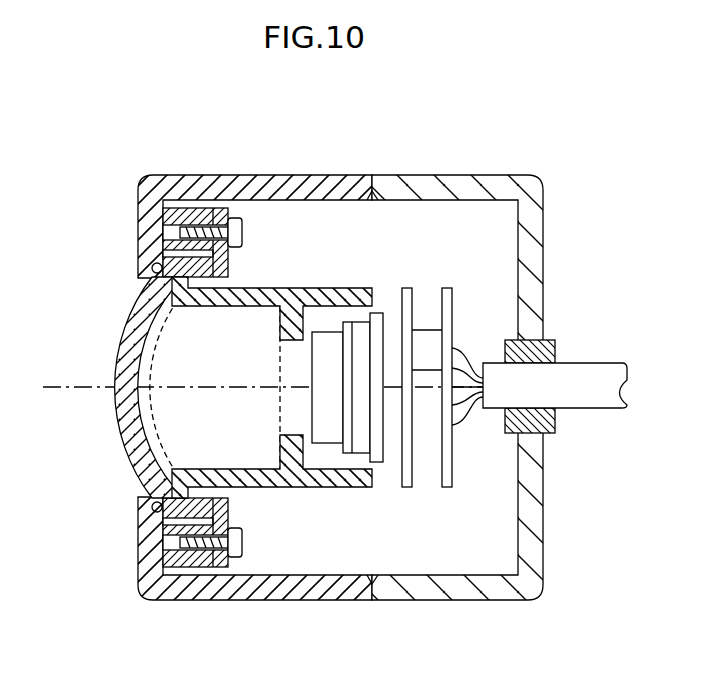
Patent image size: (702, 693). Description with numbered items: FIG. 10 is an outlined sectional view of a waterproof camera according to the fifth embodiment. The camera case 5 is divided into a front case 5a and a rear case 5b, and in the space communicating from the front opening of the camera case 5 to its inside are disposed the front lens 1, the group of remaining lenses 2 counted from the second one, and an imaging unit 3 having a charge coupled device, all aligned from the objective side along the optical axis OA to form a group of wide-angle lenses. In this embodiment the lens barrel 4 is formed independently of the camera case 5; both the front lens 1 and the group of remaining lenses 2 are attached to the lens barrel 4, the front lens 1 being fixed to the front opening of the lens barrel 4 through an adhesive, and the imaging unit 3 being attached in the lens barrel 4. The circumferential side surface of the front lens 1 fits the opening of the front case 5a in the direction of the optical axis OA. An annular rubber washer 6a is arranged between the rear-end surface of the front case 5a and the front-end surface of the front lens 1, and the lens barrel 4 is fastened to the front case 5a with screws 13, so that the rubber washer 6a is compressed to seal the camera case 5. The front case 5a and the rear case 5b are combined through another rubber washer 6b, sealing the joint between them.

The front lens 1 is at (122, 437).
The group of remaining lenses 2 is at (185, 347).
The imaging unit 3 is at (460, 304).
The lens barrel 4 is at (273, 288).
The camera case 5 is at (381, 399).
The front case 5a is at (220, 590).
The rear case 5b is at (535, 534).
The rubber washer 6a is at (150, 512).
The rubber washer 6b is at (368, 598).
The screws 13 is at (243, 532).
The optical axis OA is at (70, 387).